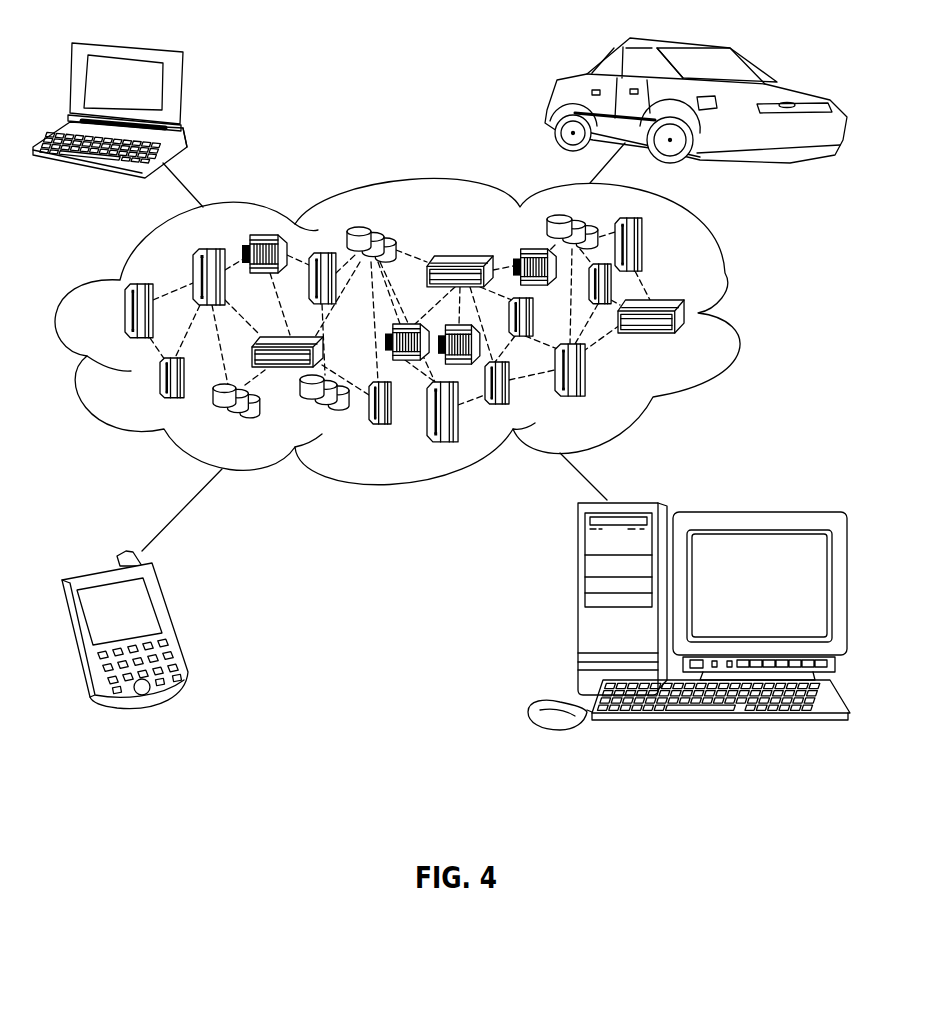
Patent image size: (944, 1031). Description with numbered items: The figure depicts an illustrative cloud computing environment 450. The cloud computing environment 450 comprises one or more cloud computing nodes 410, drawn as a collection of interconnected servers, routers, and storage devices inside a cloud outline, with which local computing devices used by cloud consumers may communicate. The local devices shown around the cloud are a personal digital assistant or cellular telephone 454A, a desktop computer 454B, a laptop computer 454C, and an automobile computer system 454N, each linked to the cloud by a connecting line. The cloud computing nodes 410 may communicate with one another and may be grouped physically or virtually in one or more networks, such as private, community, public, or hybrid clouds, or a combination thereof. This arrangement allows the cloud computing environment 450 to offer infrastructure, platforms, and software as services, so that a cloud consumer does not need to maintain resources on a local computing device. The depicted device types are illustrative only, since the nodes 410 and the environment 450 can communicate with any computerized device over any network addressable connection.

The laptop computer 454C is at (183, 88).
The automobile computer system 454N is at (553, 93).
The personal digital assistant (PDA) or cellular telephone 454A is at (168, 618).
The desktop computer 454B is at (577, 603).
The cloud computing environment 450 is at (727, 277).
The cloud computing nodes 410 is at (452, 332).